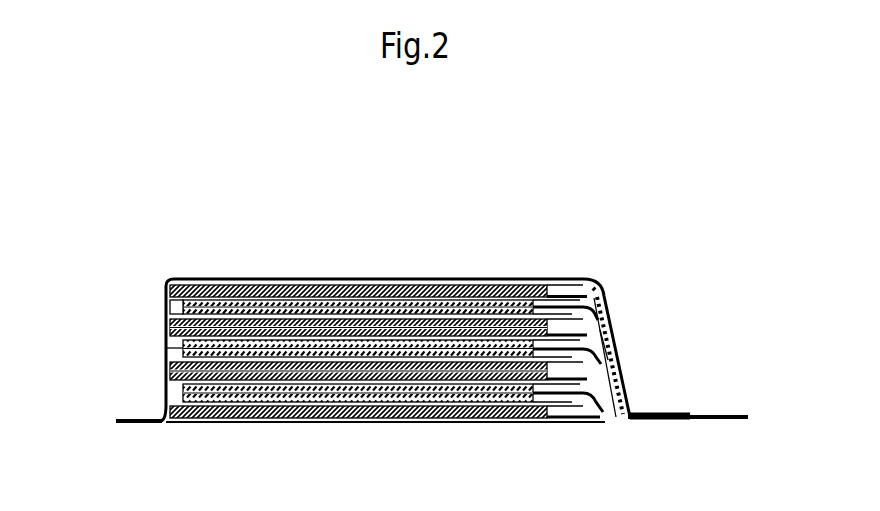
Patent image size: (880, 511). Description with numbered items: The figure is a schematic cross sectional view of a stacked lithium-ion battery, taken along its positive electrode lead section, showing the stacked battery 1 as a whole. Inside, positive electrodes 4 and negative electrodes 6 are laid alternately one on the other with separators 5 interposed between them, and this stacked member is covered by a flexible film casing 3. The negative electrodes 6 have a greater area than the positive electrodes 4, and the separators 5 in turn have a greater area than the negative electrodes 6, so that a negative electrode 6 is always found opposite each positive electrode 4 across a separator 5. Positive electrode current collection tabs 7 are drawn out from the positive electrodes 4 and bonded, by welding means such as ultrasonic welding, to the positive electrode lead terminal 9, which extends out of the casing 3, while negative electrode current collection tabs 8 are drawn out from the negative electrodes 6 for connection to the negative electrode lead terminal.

The stacked battery 1 is at (52, 153).
The flexible film casing 3 is at (358, 278).
The positive electrode 4 is at (498, 345).
The separator 5 is at (550, 304).
The negative electrode 6 is at (255, 316).
The positive electrode current collection tab 7 is at (590, 293).
The negative electrode current collection tab 8 is at (612, 323).
The positive electrode lead terminal 9 is at (708, 413).